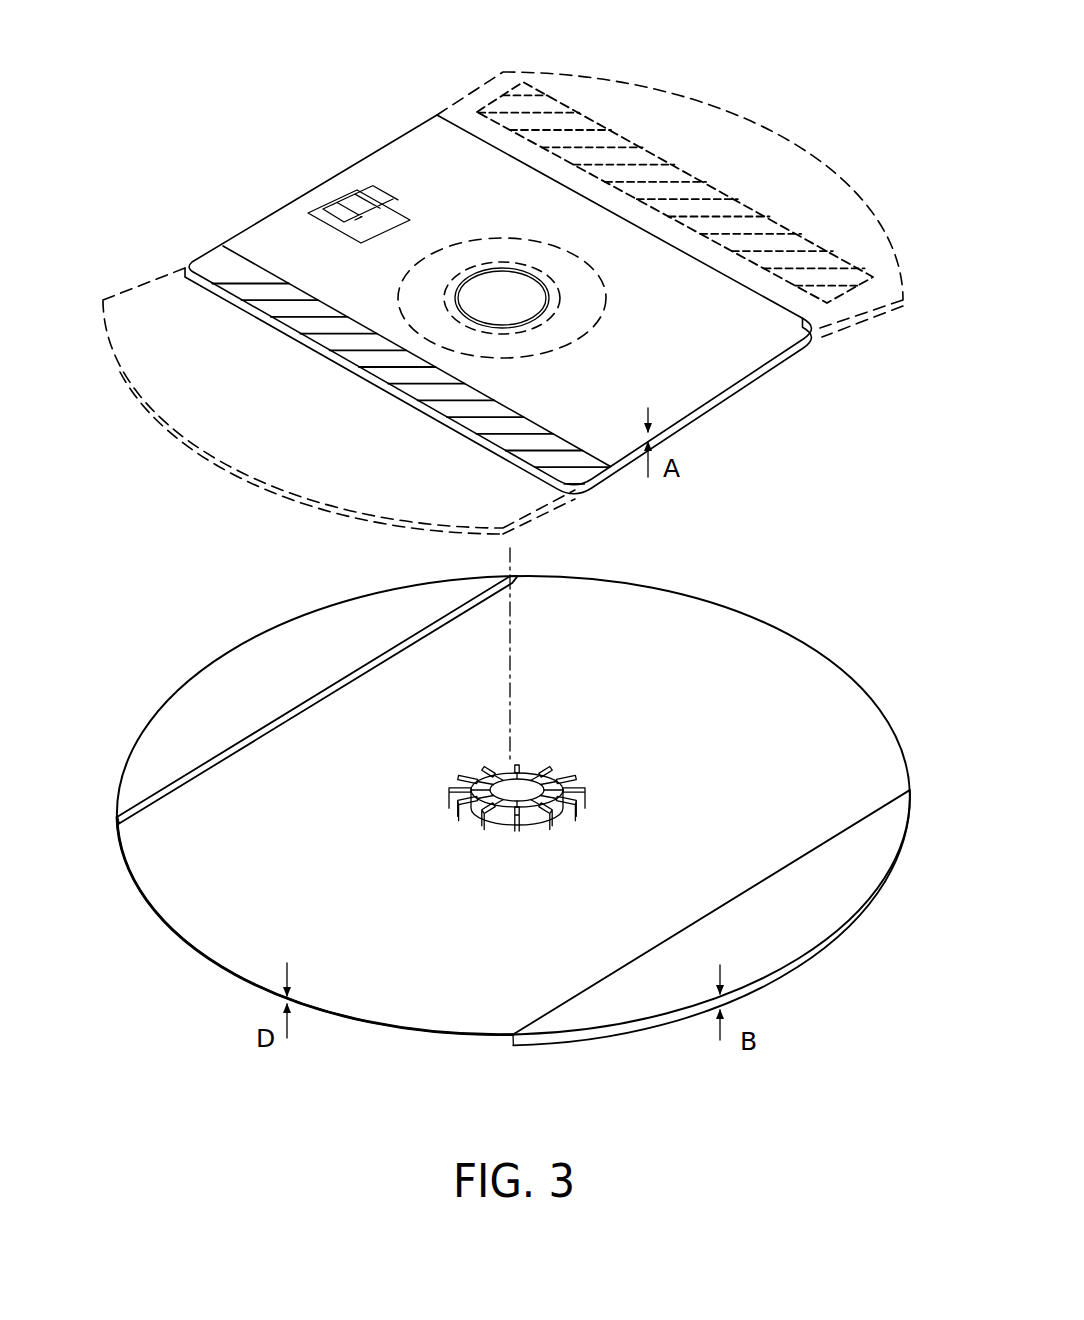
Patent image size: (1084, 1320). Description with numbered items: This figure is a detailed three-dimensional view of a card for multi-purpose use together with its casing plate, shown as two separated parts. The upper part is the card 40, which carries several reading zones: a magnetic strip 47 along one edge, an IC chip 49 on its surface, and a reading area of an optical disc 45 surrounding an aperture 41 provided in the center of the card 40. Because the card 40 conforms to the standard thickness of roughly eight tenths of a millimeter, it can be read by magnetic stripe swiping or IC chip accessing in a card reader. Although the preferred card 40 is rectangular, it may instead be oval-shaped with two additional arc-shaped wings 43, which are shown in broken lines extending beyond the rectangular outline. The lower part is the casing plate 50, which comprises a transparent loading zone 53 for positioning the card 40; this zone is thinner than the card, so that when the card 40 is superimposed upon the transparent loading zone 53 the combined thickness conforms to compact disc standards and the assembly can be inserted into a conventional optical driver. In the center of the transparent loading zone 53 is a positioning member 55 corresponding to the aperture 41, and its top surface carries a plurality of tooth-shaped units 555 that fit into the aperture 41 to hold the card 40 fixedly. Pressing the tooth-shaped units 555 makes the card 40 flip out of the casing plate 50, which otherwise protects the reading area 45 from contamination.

The card 40 is at (392, 158).
The aperture 41 is at (490, 283).
The arc-shaped wings 43 is at (133, 295).
The reading area of an optical disc 45 is at (577, 323).
The magnetic strip 47 is at (210, 260).
The IC chip 49 is at (330, 205).
The casing plate 50 is at (233, 677).
The transparent loading zone 53 is at (827, 693).
The positioning member 55 is at (562, 752).
The tooth-shaped units 555 is at (527, 757).